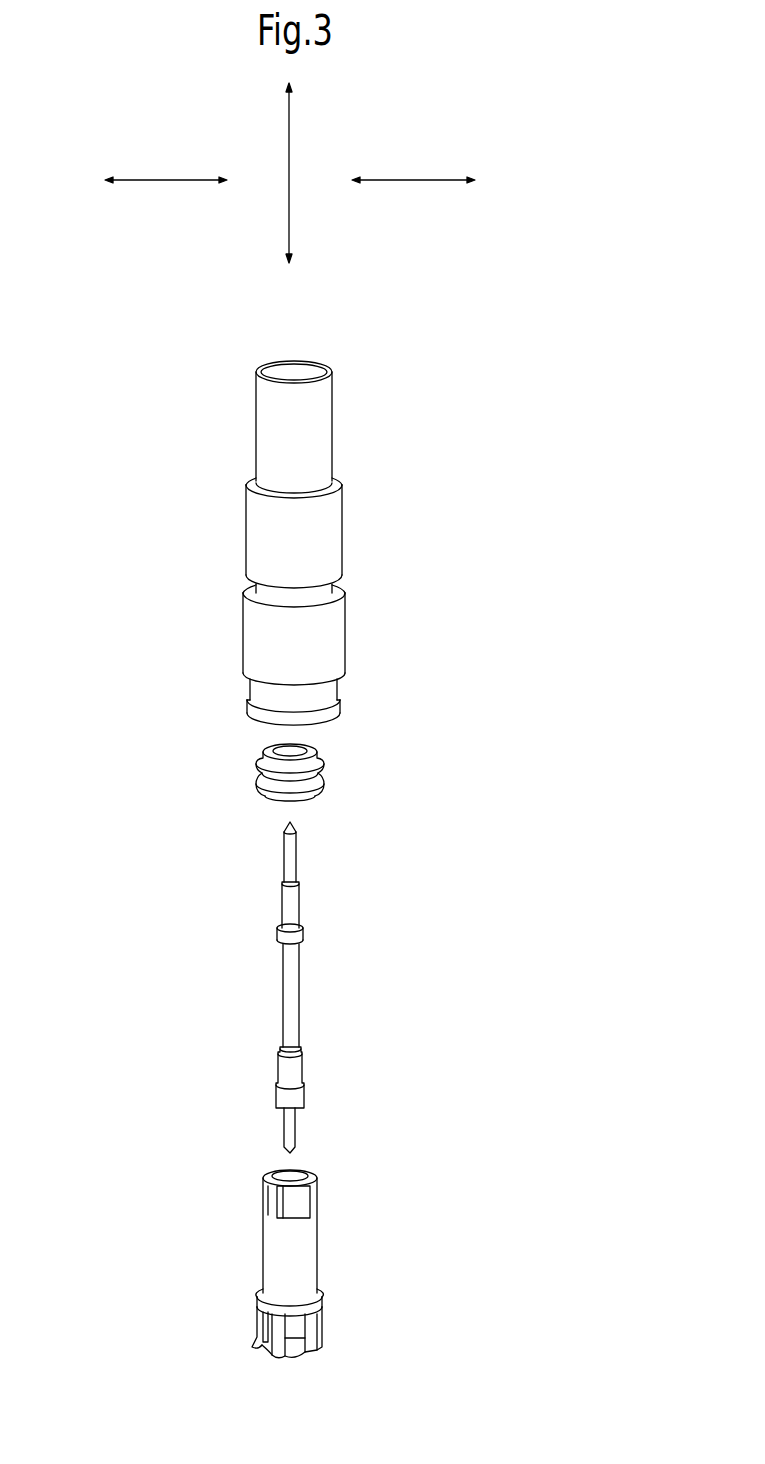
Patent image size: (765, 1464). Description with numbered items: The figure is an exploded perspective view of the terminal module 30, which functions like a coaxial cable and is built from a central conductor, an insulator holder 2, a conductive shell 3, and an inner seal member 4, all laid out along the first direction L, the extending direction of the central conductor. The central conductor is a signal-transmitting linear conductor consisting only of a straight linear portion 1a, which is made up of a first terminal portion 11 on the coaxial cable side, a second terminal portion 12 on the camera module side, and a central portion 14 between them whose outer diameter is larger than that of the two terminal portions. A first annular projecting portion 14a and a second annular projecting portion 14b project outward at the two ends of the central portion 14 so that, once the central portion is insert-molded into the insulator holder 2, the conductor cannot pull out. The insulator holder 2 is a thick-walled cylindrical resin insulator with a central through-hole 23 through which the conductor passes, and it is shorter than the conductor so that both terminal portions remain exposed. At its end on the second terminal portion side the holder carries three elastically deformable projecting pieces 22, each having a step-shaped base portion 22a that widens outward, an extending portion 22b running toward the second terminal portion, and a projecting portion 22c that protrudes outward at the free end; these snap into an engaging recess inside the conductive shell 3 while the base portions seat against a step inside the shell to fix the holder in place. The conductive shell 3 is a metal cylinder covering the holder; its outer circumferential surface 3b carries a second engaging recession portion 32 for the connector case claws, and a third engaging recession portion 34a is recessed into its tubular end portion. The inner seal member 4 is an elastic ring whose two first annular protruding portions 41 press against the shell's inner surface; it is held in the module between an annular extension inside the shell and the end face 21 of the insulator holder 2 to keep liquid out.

The first direction L is at (290, 148).
The terminal module 30 is at (415, 390).
The conductive shell 3 is at (370, 523).
The outer circumferential surface 3b is at (258, 525).
The second engaging recession portion 32 is at (263, 592).
The third engaging recession portion 34a is at (325, 695).
The inner seal member 4 is at (260, 768).
The first annular protruding portions 41 is at (327, 762).
The straight linear portion 1a is at (243, 997).
The first terminal portion 11 is at (292, 862).
The central portion 14 is at (293, 1020).
The first annular projecting portion 14a is at (302, 935).
The second annular projecting portion 14b is at (297, 1095).
The second terminal portion 12 is at (290, 1128).
The insulator holder 2 is at (325, 1270).
The end face 21 is at (270, 1172).
The through-hole 23 is at (293, 1175).
The projecting pieces 22 is at (427, 1283).
The base portion 22a is at (320, 1293).
The extending portion 22b is at (295, 1320).
The projecting portion 22c is at (295, 1347).